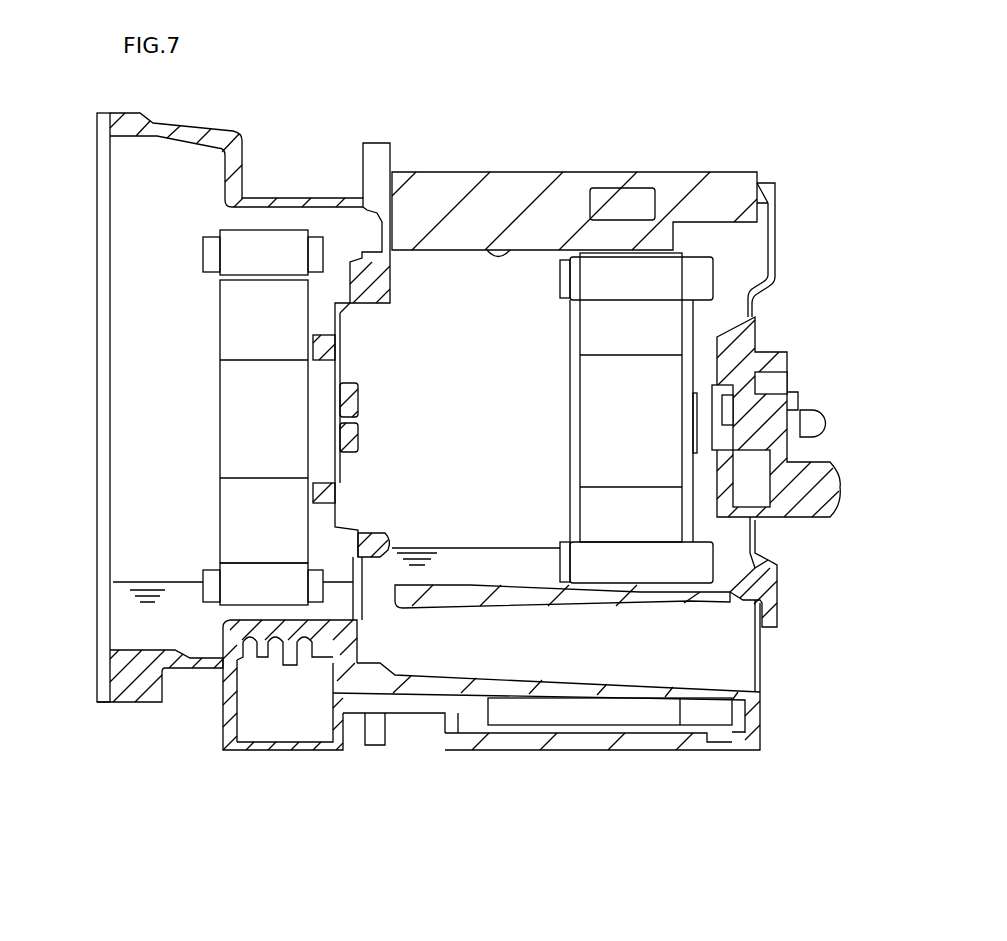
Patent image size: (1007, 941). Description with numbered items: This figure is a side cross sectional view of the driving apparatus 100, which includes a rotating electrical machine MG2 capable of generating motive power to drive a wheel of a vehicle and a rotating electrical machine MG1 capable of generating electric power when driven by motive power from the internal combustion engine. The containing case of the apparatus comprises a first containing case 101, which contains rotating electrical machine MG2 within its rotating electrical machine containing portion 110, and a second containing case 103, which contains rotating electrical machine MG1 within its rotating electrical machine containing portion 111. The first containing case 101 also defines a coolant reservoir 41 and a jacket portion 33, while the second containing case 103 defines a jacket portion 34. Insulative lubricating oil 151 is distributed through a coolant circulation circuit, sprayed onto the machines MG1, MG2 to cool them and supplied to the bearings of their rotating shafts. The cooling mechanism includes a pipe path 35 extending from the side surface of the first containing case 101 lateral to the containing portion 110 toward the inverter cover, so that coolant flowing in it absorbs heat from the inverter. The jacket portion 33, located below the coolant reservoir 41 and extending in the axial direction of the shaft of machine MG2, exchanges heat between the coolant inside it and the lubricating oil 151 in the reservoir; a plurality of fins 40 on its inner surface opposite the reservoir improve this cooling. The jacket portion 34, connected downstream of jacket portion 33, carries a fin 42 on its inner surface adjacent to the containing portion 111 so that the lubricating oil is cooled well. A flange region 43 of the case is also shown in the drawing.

The driving apparatus 100 is at (679, 128).
The first containing case 101 is at (430, 172).
The second containing case 103 is at (300, 200).
The rotating electrical machine containing portion 110 is at (513, 250).
The rotating electrical machine containing portion 111 is at (160, 138).
The lubricating oil 151 is at (160, 579).
The lower case flange 43 is at (173, 650).
The coolant reservoir 41 is at (717, 650).
The jacket portion 34 is at (262, 728).
The fin 42 is at (290, 667).
The pipe path 35 is at (412, 702).
The fins 40 is at (578, 710).
The jacket portion 33 is at (710, 730).
The rotating electrical machine MG1 is at (203, 345).
The rotating electrical machine MG2 is at (545, 346).